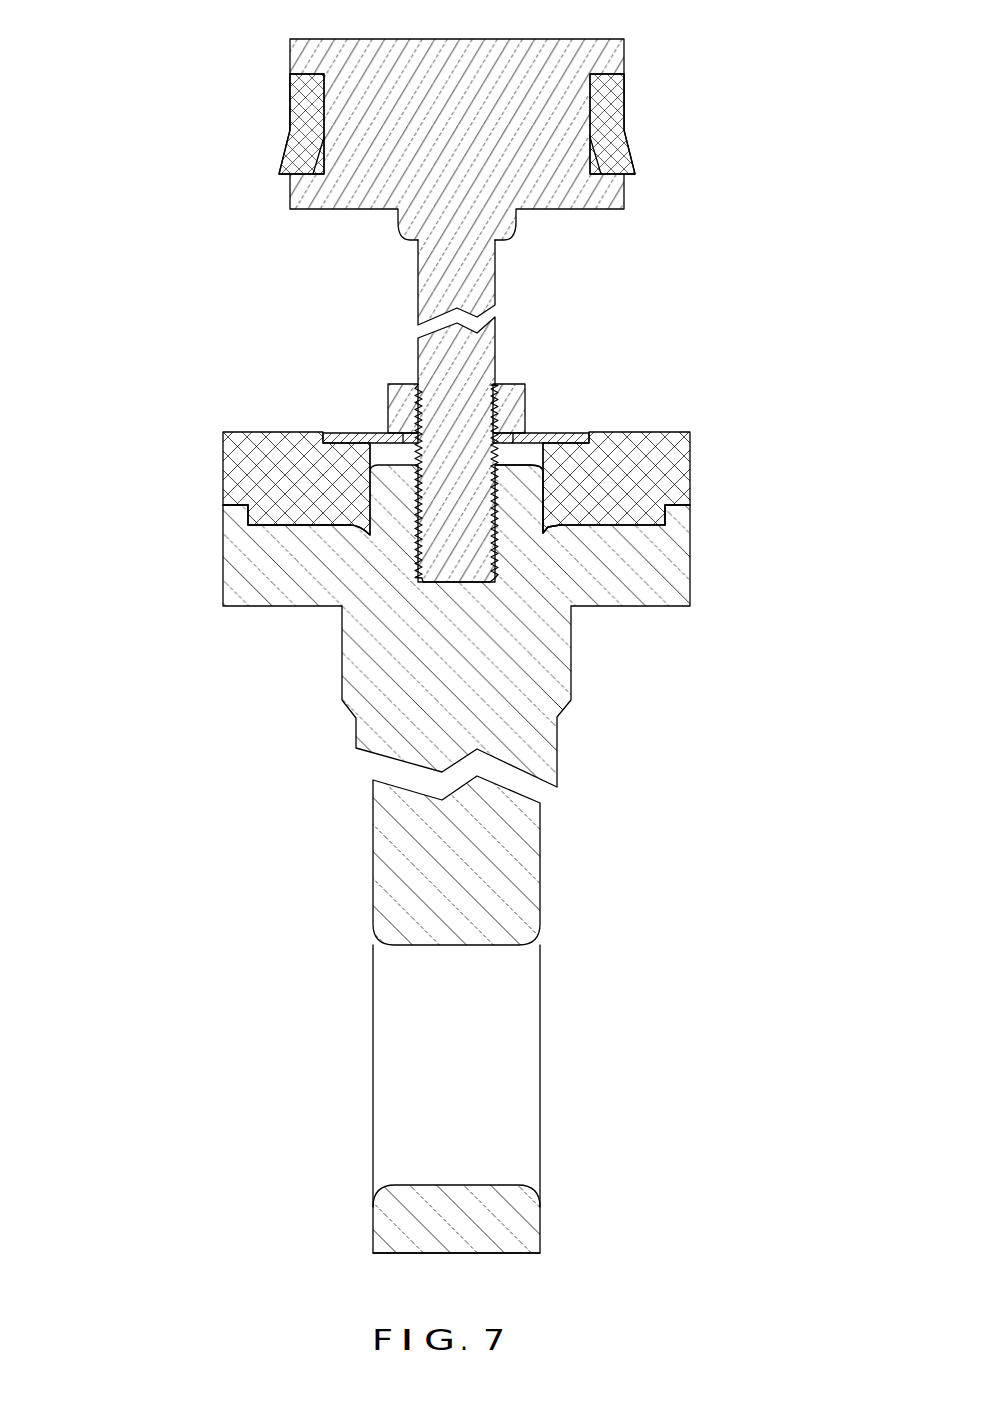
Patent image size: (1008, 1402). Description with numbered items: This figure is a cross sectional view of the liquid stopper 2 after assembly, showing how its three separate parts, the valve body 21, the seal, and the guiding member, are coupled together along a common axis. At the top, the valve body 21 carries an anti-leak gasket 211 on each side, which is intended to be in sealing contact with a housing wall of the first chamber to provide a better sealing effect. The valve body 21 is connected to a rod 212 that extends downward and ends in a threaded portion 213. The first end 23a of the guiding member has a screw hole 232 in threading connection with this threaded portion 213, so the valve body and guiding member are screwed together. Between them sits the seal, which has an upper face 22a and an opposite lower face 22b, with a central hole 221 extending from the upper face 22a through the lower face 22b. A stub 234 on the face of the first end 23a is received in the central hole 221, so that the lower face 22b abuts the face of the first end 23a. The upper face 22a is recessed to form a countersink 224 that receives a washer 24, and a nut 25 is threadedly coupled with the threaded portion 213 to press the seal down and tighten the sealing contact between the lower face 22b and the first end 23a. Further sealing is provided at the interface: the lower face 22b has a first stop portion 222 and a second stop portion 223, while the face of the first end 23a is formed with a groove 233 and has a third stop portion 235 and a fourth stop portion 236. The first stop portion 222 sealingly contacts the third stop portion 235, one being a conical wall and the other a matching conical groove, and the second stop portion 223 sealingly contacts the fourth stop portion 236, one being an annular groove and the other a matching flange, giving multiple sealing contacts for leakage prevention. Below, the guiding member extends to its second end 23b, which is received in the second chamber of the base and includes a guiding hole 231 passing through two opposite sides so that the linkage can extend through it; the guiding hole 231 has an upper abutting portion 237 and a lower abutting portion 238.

The liquid stopper 2 is at (461, 638).
The valve body 21 is at (488, 120).
The anti-leak gasket 211 is at (622, 137).
The rod 212 is at (493, 280).
The threaded portion 213 is at (497, 458).
The upper face 22a is at (242, 432).
The lower face 22b is at (190, 532).
The central hole 221 is at (382, 453).
The first stop portion 222 is at (670, 571).
The second stop portion 223 is at (675, 517).
The countersink 224 is at (358, 433).
The first end 23a is at (223, 507).
The second end 23b is at (493, 1253).
The guiding hole 231 is at (430, 1026).
The screw hole 232 is at (420, 530).
The groove 233 is at (283, 527).
The stub 234 is at (527, 490).
The third stop portion 235 is at (548, 533).
The fourth stop portion 236 is at (779, 520).
The upper abutting portion 237 is at (443, 945).
The lower abutting portion 238 is at (487, 1185).
The washer 24 is at (422, 393).
The nut 25 is at (513, 387).